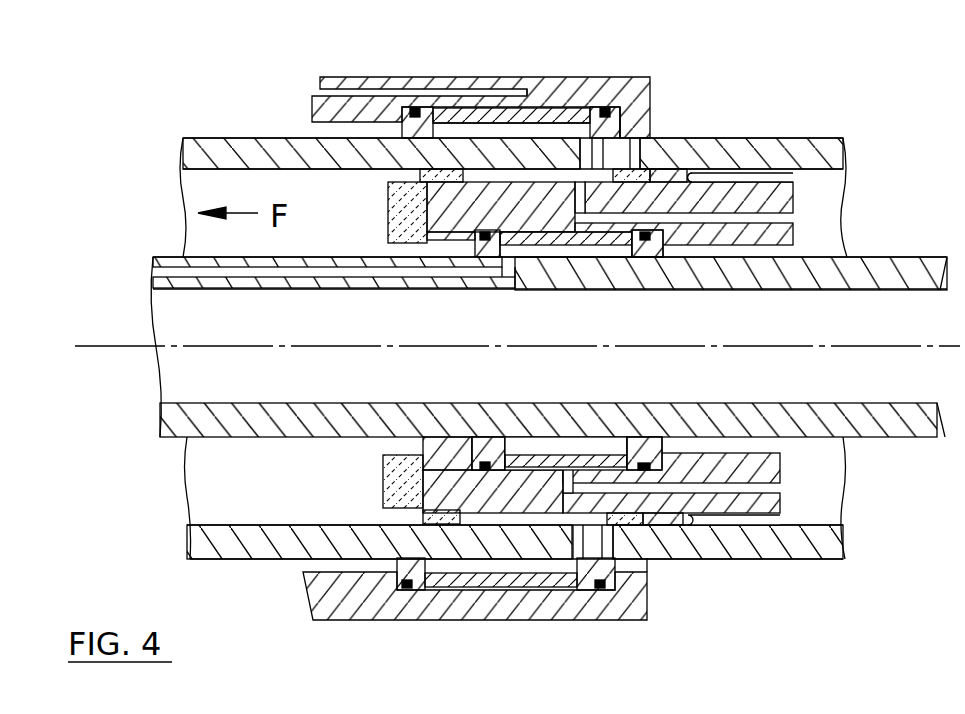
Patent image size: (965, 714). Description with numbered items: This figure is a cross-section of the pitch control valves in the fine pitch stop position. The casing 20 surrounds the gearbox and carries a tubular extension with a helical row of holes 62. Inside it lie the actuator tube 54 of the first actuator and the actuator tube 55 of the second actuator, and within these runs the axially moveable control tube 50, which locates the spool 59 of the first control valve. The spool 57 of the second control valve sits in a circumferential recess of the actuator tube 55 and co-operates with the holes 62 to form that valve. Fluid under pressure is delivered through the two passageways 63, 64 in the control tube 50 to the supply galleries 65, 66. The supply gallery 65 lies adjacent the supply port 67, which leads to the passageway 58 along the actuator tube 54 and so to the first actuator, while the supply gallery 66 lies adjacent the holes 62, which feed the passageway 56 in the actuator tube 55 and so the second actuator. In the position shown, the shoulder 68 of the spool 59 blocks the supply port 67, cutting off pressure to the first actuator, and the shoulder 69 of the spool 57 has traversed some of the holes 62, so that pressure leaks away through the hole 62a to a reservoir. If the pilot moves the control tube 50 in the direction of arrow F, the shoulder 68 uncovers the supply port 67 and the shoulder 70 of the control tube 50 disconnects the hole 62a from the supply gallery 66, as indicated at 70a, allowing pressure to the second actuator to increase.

The casing 20 is at (265, 138).
The control tube 50 is at (788, 178).
The actuator tube 54 is at (887, 257).
The actuator tube 55 is at (653, 100).
The passageway 56 is at (440, 77).
The spool 57 is at (578, 115).
The passageway 58 is at (207, 288).
The spool 59 is at (478, 245).
The holes 62 is at (540, 108).
The hole 62a is at (620, 127).
The passageway 63 is at (775, 490).
The passageway 64 is at (788, 203).
The supply gallery 65 is at (538, 445).
The supply gallery 66 is at (395, 200).
The supply port 67 is at (523, 265).
The shoulder 68 is at (487, 265).
The shoulder 69 is at (555, 125).
The shoulder 70 is at (722, 152).
The shoulder position 70a is at (665, 150).